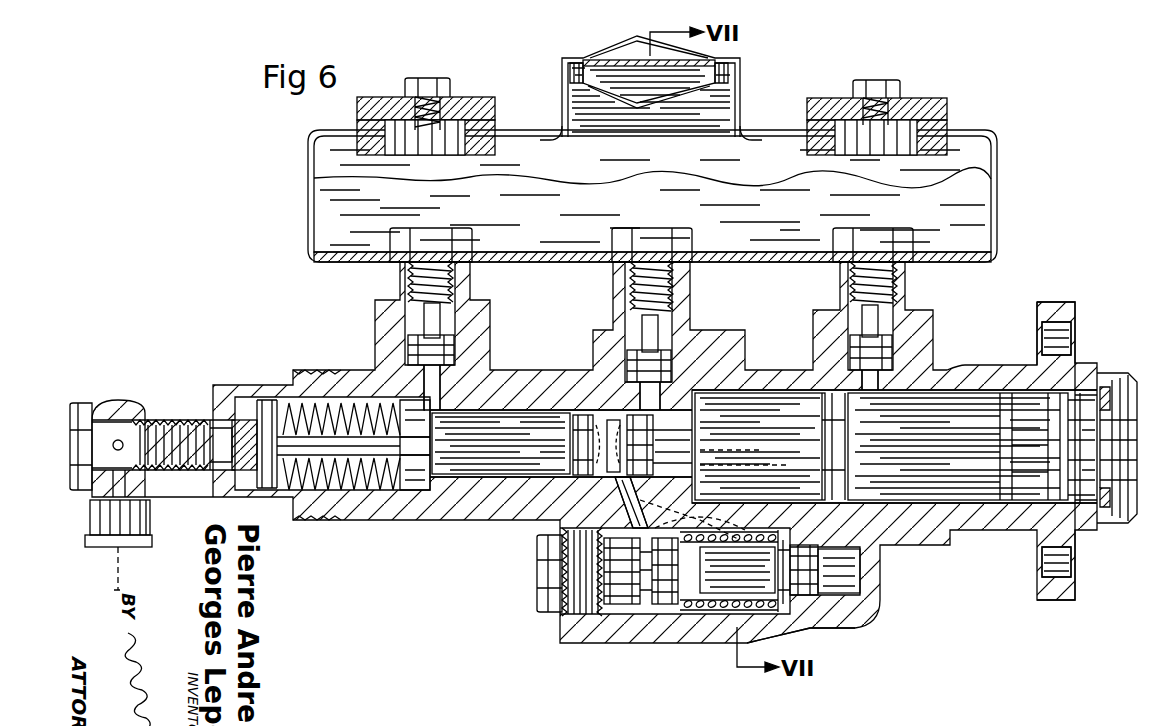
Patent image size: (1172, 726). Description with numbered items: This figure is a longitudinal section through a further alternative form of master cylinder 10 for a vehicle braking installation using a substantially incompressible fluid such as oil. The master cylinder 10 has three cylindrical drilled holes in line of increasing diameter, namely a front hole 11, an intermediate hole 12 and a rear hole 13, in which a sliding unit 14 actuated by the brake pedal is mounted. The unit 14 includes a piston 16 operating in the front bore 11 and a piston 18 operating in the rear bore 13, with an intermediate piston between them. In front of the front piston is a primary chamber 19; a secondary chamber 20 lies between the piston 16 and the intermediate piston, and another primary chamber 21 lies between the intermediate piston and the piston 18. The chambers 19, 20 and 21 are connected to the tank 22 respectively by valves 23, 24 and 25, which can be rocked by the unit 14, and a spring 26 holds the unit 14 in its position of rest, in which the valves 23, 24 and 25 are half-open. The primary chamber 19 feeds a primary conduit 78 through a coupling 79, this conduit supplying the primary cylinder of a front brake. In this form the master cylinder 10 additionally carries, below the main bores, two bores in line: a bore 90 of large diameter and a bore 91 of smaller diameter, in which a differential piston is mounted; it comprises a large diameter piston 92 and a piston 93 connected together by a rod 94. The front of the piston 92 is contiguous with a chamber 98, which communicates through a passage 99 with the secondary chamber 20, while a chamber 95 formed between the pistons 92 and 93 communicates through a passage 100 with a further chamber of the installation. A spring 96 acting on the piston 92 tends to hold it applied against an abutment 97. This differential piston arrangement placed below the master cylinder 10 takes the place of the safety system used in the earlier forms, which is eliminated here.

The master cylinder 10 is at (440, 512).
The front hole 11 is at (508, 412).
The intermediate hole 12 is at (760, 395).
The rear hole 13 is at (998, 390).
The sliding unit 14 is at (1090, 503).
The piston 16 is at (588, 418).
The piston 18 is at (1078, 386).
The primary chamber 19 is at (340, 415).
The secondary chamber 20 is at (728, 415).
The primary chamber 21 is at (967, 403).
The tank 22 is at (652, 149).
The valve 23 is at (410, 347).
The valve 24 is at (628, 358).
The valve 25 is at (845, 347).
The spring 26 is at (276, 425).
The primary conduit 78 is at (116, 578).
The coupling 79 is at (150, 523).
The bore of large diameter 90 is at (770, 541).
The bore of smaller diameter 91 is at (868, 563).
The large diameter piston 92 is at (640, 616).
The piston 93 is at (812, 622).
The rod 94 is at (802, 556).
The chamber 95 is at (725, 548).
The spring 96 is at (724, 616).
The abutment 97 is at (630, 566).
The chamber 98 is at (592, 524).
The passage 99 is at (640, 512).
The passage 100 is at (745, 474).